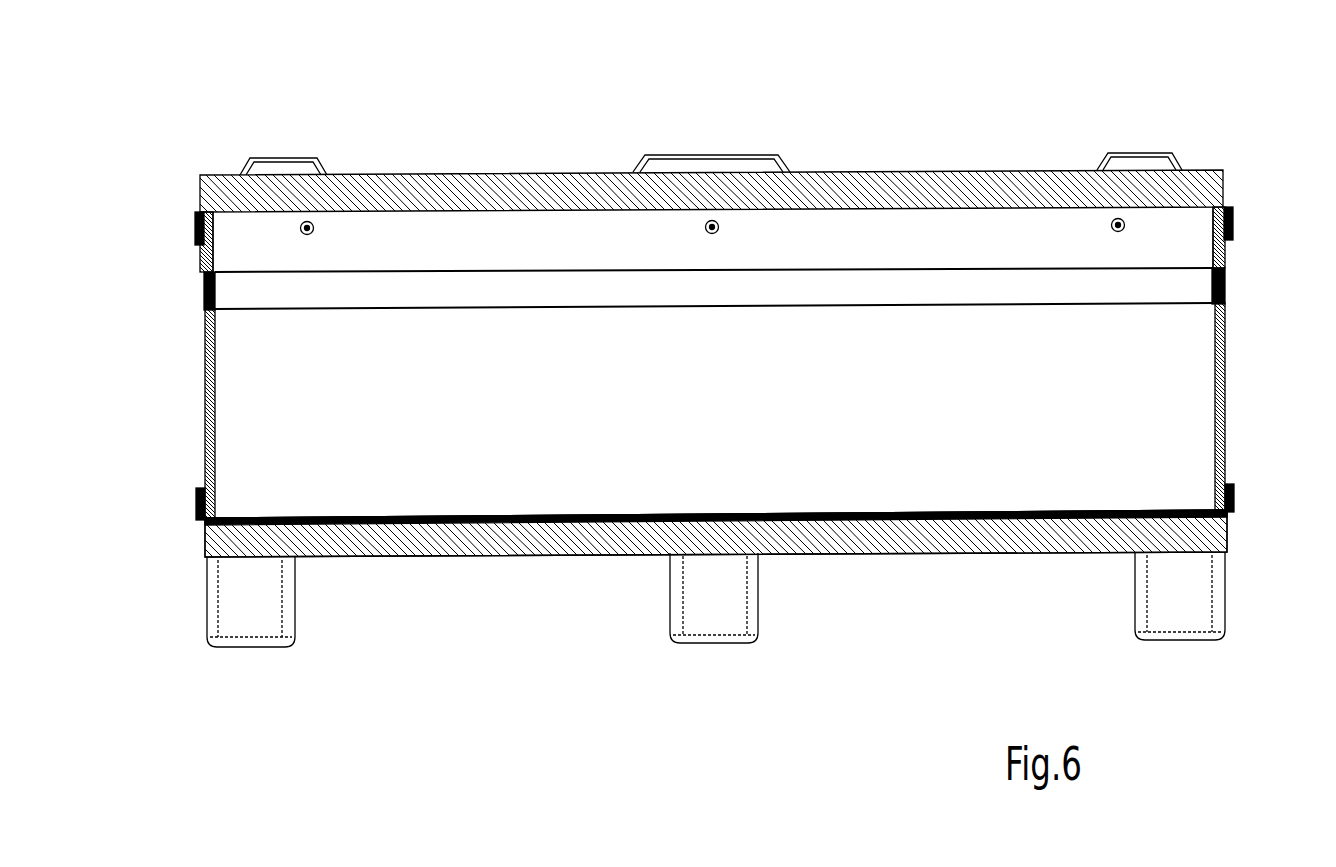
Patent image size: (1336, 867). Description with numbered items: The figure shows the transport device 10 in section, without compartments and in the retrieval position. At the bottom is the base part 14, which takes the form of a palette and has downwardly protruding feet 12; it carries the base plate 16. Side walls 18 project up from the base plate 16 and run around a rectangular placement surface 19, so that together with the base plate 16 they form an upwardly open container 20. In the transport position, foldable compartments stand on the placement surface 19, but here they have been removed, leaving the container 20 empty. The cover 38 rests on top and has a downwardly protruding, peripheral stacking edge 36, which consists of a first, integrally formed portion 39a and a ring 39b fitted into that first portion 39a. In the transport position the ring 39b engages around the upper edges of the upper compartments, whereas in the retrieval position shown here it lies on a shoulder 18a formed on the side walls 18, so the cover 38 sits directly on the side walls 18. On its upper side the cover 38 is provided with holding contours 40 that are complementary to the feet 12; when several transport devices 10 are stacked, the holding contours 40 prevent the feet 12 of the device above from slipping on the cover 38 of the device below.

The transport device 10 is at (1003, 97).
The feet 12 is at (237, 605).
The base part 14 is at (935, 537).
The base plate 16 is at (552, 535).
The side walls 18 is at (205, 440).
The shoulder 18a is at (216, 272).
The placement surface 19 is at (845, 512).
The container 20 is at (1230, 443).
The stacking edge 36 is at (721, 191).
The cover 38 is at (494, 178).
The first portion 39a is at (200, 222).
The ring 39b is at (203, 270).
The holding contours 40 is at (283, 158).